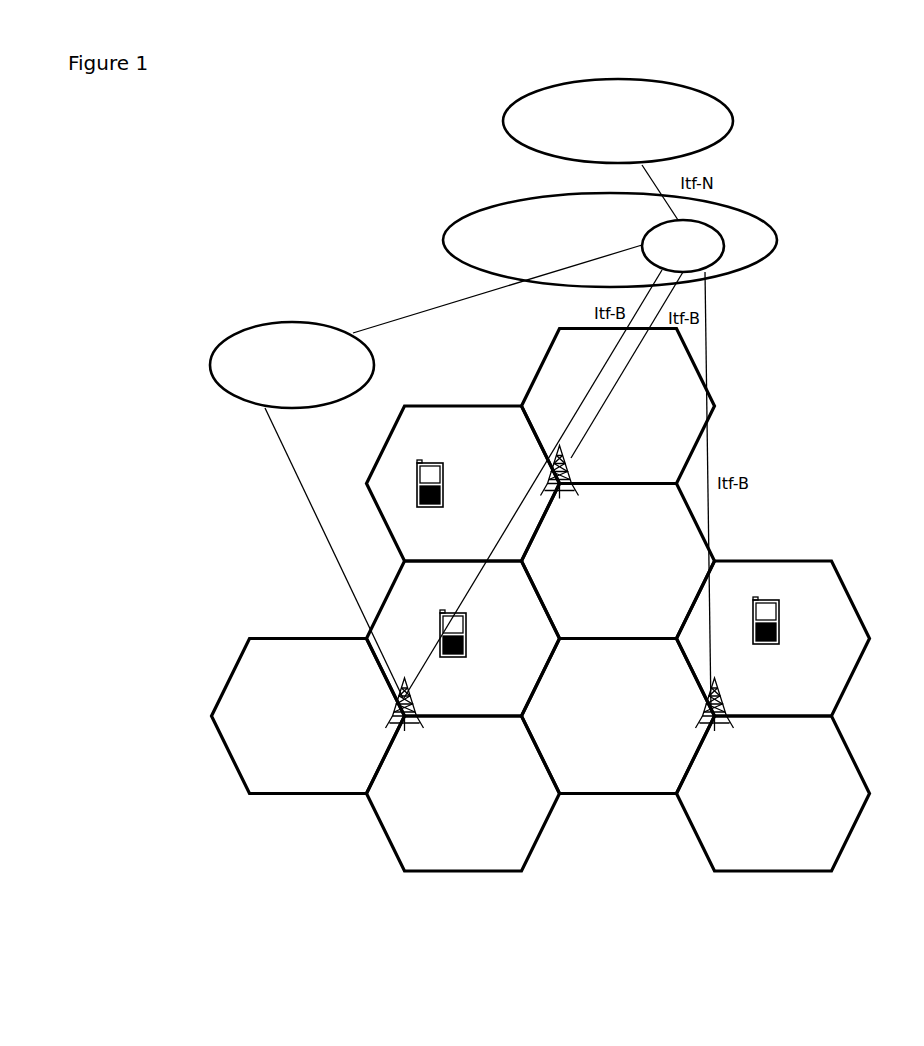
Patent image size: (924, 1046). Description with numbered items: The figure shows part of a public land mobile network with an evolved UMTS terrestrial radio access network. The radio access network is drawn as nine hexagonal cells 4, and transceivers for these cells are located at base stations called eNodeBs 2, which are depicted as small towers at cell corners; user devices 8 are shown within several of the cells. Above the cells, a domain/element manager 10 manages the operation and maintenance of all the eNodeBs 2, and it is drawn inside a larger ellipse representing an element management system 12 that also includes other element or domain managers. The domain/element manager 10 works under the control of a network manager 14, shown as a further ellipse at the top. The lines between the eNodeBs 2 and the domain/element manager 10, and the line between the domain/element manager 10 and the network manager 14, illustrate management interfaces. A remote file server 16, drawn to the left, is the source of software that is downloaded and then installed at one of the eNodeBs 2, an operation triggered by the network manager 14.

The eNodeB 2 is at (573, 465).
The cell 4 is at (698, 370).
The user equipment 8 is at (447, 480).
The domain/element manager 10 is at (725, 248).
The element management system 12 is at (452, 221).
The network manager 14 is at (723, 100).
The remote file server 16 is at (222, 342).